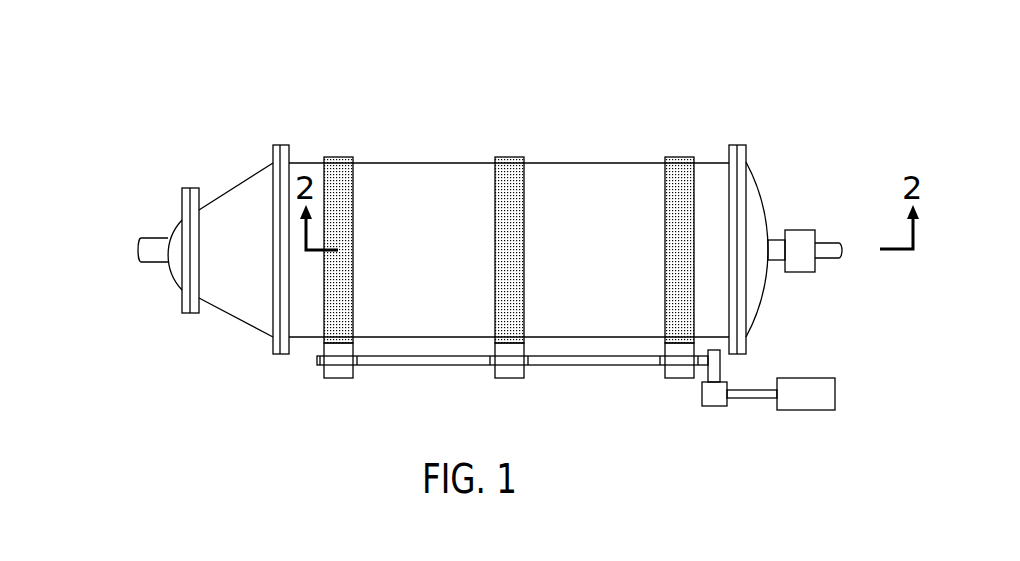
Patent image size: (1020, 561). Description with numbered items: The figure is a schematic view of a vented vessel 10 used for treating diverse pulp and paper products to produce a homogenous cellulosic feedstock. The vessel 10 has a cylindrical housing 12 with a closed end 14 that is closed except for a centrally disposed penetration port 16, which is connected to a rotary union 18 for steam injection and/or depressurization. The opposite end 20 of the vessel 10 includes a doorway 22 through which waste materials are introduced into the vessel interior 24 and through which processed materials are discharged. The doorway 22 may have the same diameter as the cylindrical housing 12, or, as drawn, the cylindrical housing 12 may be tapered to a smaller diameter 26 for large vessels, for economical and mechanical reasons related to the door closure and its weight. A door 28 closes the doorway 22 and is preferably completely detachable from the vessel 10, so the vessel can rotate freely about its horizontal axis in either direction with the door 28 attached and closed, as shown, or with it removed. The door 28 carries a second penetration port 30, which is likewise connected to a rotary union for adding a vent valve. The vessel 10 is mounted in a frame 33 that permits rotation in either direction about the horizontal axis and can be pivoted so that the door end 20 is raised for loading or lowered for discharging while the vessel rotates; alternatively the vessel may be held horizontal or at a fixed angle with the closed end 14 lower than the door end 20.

The vented vessel 10 is at (509, 170).
The cylindrical housing 12 is at (400, 163).
The closed end 14 is at (808, 201).
The penetration port 16 is at (772, 265).
The rotary union 18 is at (815, 232).
The opposite end 20 is at (162, 202).
The doorway 22 is at (183, 192).
The vessel interior 24 is at (441, 262).
The smaller diameter 26 is at (190, 313).
The door 28 is at (168, 222).
The second penetration port 30 is at (101, 289).
The frame 33 is at (495, 288).